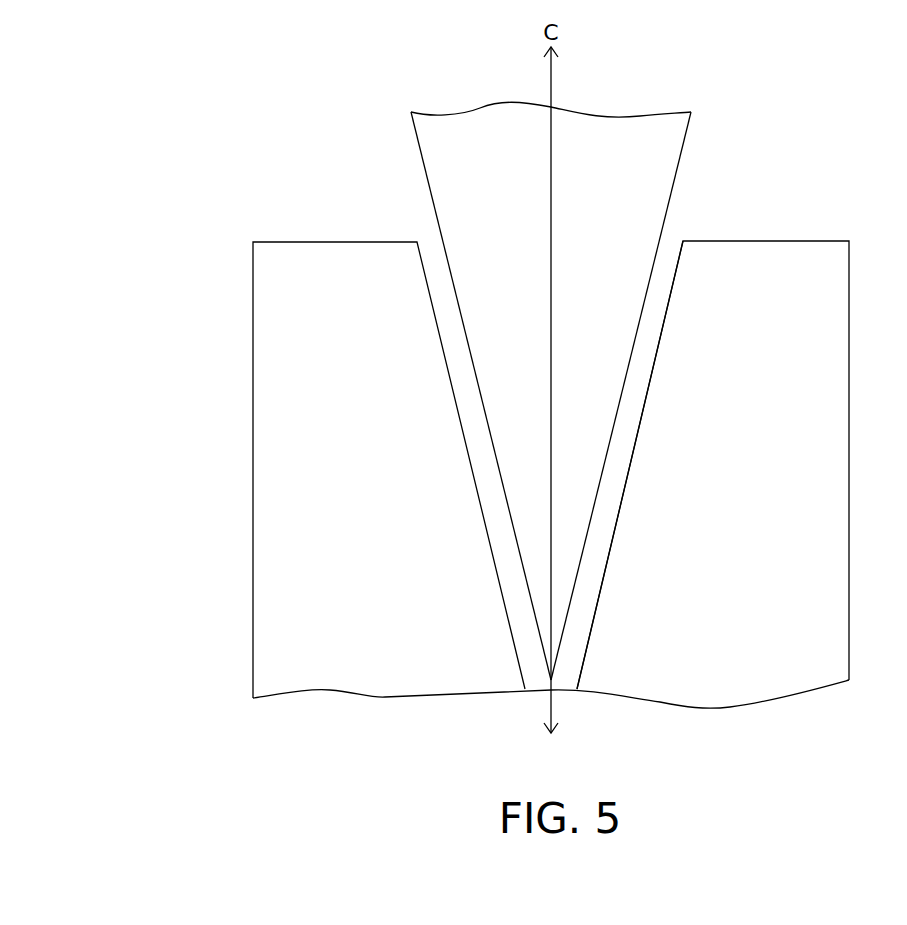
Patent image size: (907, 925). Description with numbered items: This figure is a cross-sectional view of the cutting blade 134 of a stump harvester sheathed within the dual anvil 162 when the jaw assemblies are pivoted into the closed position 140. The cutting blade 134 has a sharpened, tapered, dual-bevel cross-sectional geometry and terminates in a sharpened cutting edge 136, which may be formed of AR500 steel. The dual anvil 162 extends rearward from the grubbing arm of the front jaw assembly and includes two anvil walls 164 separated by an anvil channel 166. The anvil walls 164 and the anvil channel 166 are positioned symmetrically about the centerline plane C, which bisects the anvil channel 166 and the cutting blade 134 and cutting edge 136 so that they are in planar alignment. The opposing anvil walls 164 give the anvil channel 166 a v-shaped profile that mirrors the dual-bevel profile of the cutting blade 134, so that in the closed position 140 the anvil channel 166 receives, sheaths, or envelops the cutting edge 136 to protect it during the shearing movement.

The cutting blade 134 is at (460, 167).
The cutting edge 136 is at (551, 690).
The closed position 140 is at (509, 714).
The dual anvil 162 is at (224, 477).
The anvil walls 164 is at (381, 496).
The anvil channel 166 is at (674, 238).